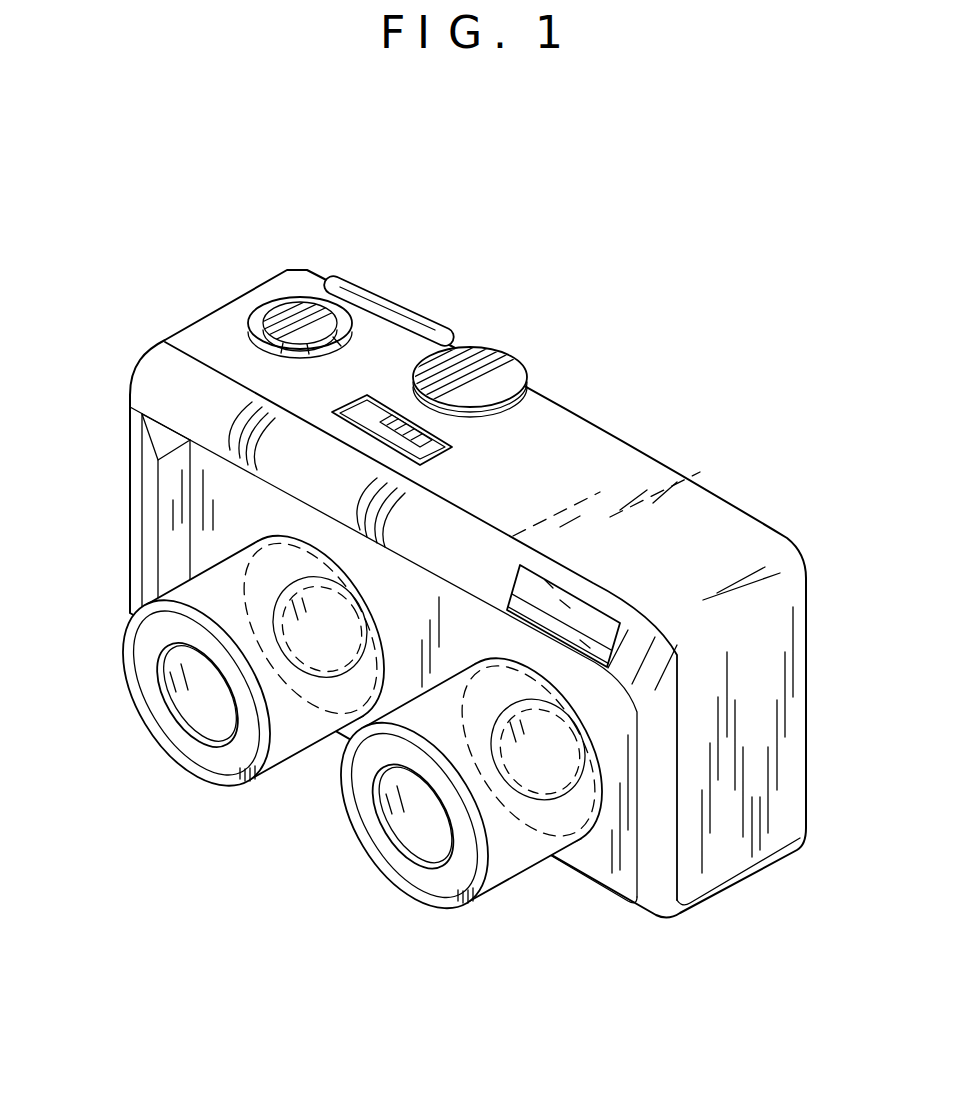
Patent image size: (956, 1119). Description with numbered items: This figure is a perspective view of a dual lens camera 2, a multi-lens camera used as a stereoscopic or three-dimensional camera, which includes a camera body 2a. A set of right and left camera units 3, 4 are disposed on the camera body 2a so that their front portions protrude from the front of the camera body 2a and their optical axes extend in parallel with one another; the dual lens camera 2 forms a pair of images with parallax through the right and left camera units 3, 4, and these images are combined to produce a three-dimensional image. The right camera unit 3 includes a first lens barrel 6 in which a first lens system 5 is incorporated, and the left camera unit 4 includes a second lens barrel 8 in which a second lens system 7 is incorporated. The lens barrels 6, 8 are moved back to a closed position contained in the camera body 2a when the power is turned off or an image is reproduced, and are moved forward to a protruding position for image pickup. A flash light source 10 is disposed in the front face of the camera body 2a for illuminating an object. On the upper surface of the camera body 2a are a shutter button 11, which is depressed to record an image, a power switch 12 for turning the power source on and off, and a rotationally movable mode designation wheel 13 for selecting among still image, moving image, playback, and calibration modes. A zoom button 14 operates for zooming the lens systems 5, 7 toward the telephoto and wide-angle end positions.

The dual lens camera 2 is at (522, 268).
The camera body 2a is at (777, 708).
The right camera unit 3 is at (133, 735).
The left camera unit 4 is at (350, 860).
The first lens system 5 is at (200, 717).
The first lens barrel 6 is at (286, 740).
The second lens system 7 is at (418, 840).
The second lens barrel 8 is at (505, 860).
The flash light source 10 is at (557, 610).
The shutter button 11 is at (270, 312).
The power switch 12 is at (445, 432).
The mode designation wheel 13 is at (507, 377).
The zoom button 14 is at (370, 290).